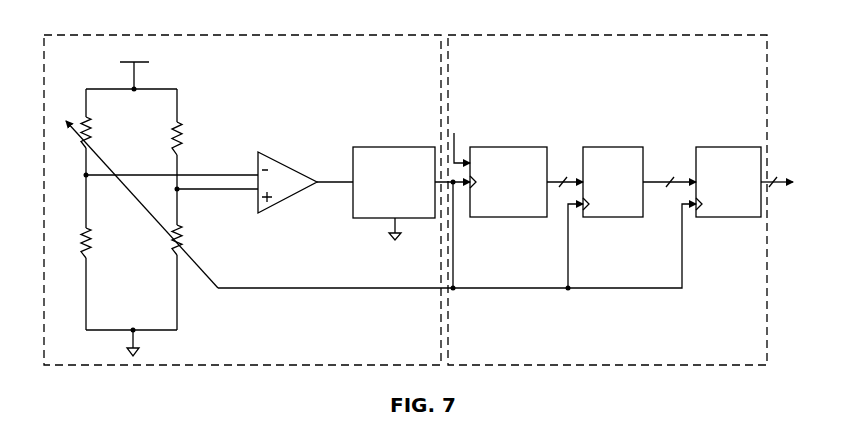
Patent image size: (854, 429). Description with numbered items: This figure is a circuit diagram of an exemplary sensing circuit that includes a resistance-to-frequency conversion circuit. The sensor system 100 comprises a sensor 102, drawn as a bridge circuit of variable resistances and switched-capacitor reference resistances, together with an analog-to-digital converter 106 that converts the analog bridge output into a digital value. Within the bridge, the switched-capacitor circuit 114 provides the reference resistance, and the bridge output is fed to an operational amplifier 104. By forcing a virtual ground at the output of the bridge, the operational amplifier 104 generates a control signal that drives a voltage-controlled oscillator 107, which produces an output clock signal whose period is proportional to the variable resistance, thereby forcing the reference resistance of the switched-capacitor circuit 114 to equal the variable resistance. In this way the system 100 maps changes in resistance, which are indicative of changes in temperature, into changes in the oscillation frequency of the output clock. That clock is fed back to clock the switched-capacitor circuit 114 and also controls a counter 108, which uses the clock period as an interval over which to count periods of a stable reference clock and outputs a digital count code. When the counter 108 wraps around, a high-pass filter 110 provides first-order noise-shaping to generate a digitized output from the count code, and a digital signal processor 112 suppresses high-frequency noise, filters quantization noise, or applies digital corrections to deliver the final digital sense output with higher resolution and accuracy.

The sensor system 100 is at (89, 20).
The sensor 102 is at (257, 200).
The operational amplifier 104 is at (287, 182).
The analog-to-digital converter 106 is at (511, 200).
The voltage-controlled oscillator 107 is at (394, 193).
The counter 108 is at (508, 182).
The high-pass filter 110 is at (613, 182).
The digital signal processor 112 is at (728, 182).
The switched-capacitor circuit 114 is at (86, 116).